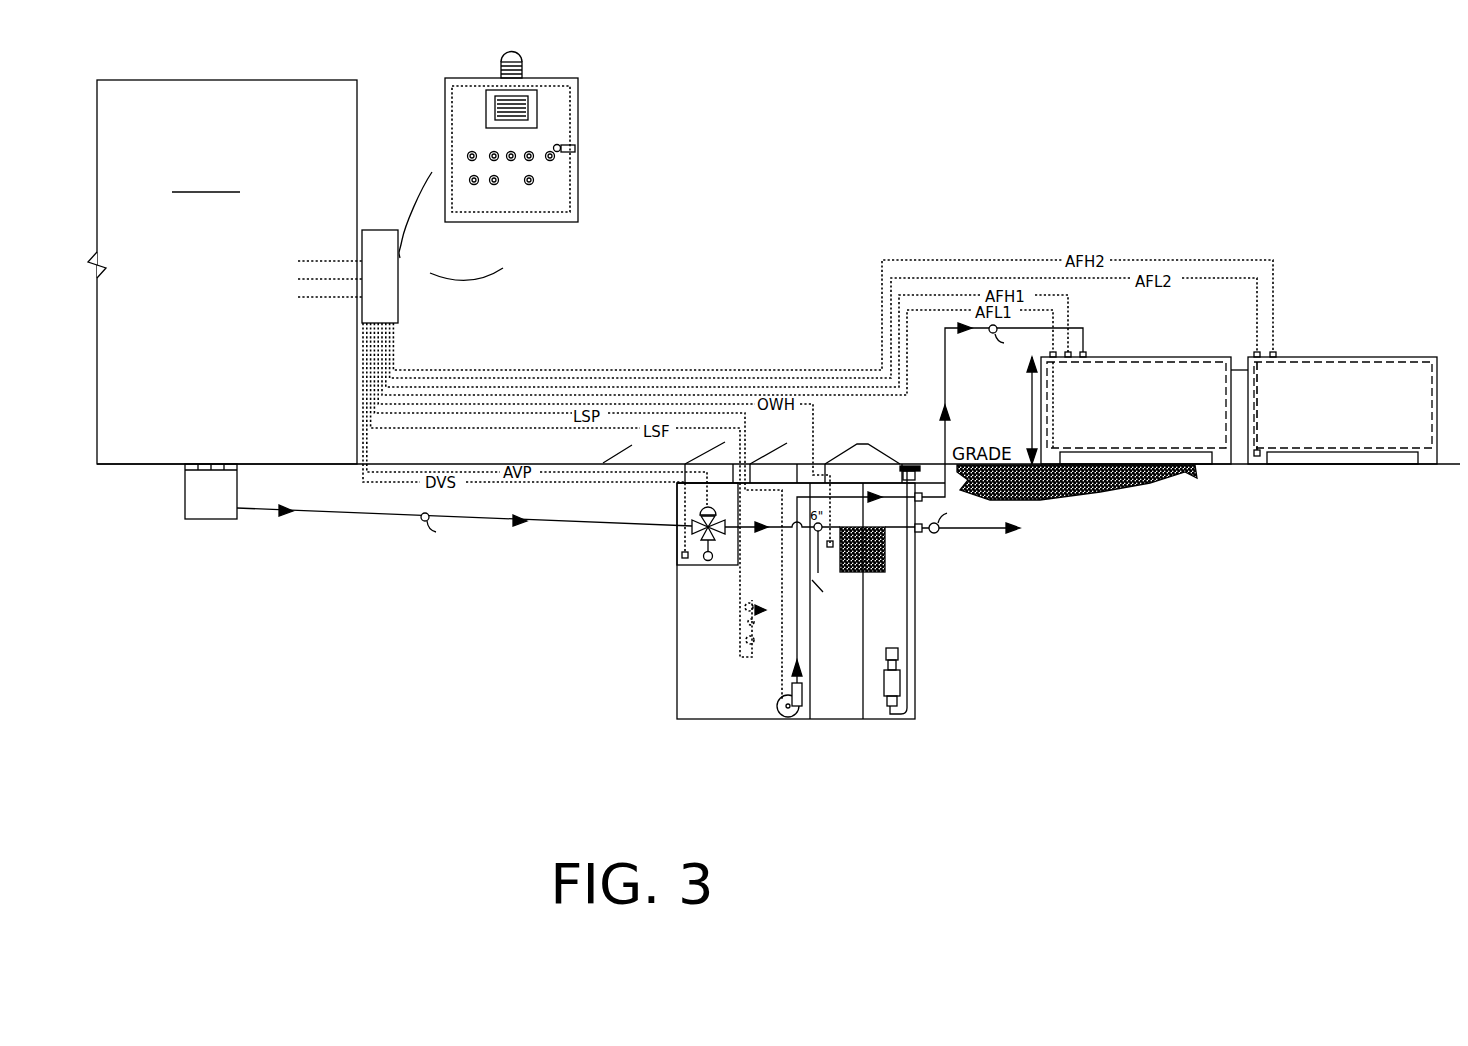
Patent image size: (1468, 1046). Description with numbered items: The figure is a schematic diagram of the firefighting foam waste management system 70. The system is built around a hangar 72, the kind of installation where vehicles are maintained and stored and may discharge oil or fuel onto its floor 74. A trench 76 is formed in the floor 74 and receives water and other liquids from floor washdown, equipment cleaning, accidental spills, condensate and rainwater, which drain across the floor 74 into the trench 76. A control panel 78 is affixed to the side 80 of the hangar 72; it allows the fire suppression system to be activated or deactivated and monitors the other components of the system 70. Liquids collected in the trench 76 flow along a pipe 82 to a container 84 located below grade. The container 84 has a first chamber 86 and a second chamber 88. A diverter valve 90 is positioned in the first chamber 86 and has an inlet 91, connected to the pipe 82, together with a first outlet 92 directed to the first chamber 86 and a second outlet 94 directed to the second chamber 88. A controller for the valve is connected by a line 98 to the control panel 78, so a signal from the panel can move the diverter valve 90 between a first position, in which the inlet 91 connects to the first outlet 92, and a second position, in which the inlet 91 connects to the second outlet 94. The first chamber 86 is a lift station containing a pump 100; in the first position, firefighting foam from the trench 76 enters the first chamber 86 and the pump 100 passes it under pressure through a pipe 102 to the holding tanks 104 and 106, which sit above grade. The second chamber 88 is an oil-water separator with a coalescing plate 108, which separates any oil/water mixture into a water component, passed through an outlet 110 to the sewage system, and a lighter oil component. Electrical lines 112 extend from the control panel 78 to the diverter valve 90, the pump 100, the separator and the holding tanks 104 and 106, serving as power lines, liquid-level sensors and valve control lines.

The firefighting foam waste management system 70 is at (856, 172).
The hangar 72 is at (288, 79).
The floor 74 is at (277, 463).
The trench 76 is at (185, 497).
The control panel 78 is at (578, 130).
The side 80 is at (358, 188).
The pipe 82 is at (480, 525).
The container 84 is at (915, 604).
The first chamber 86 is at (731, 719).
The second chamber 88 is at (855, 719).
The diverter valve 90 is at (683, 545).
The inlet 91 is at (687, 528).
The first outlet 92 is at (698, 567).
The second outlet 94 is at (727, 533).
The line 98 is at (548, 463).
The pump 100 is at (797, 720).
The pipe 102 is at (950, 380).
The holding tank 104 is at (1100, 366).
The holding tank 106 is at (1308, 366).
The coalescing plate 108 is at (887, 545).
The outlet 110 is at (915, 542).
The electrical lines 112 is at (927, 467).